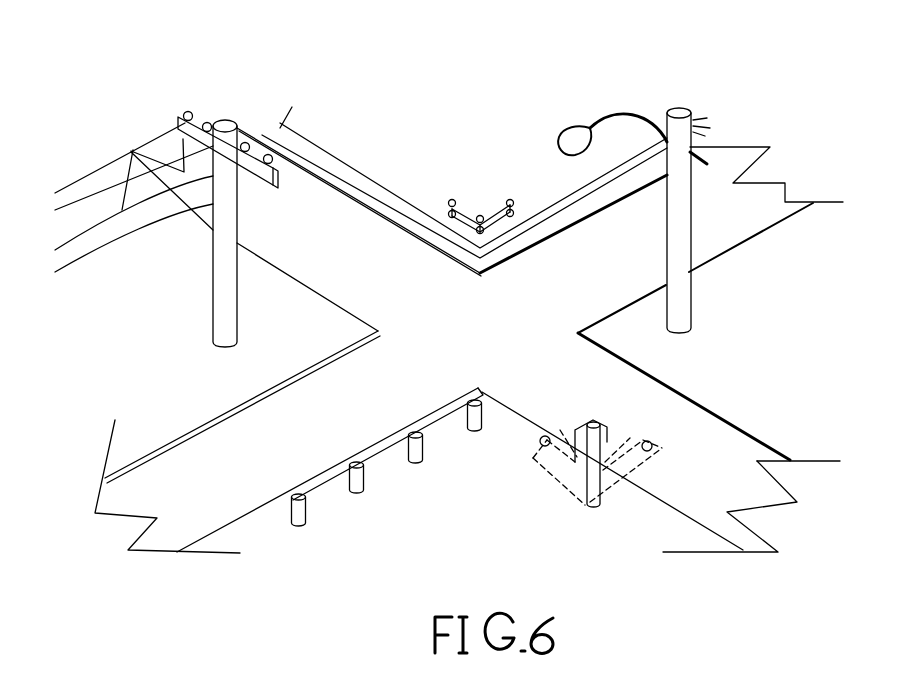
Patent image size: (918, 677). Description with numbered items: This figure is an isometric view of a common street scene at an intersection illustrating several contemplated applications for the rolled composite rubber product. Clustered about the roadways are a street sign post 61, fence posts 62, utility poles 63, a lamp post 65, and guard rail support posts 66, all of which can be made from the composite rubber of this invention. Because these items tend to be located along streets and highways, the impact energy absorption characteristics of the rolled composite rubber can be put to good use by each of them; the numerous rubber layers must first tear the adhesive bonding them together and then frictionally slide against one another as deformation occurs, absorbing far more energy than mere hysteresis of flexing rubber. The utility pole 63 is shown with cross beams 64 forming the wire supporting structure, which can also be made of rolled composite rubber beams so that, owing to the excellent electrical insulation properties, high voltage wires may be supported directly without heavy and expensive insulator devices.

The street sign post 61 is at (592, 425).
The fence posts 62 is at (457, 203).
The utility poles 63 is at (228, 127).
The cross beams 64 is at (183, 118).
The lamp post 65 is at (677, 140).
The guard rail support posts 66 is at (482, 393).